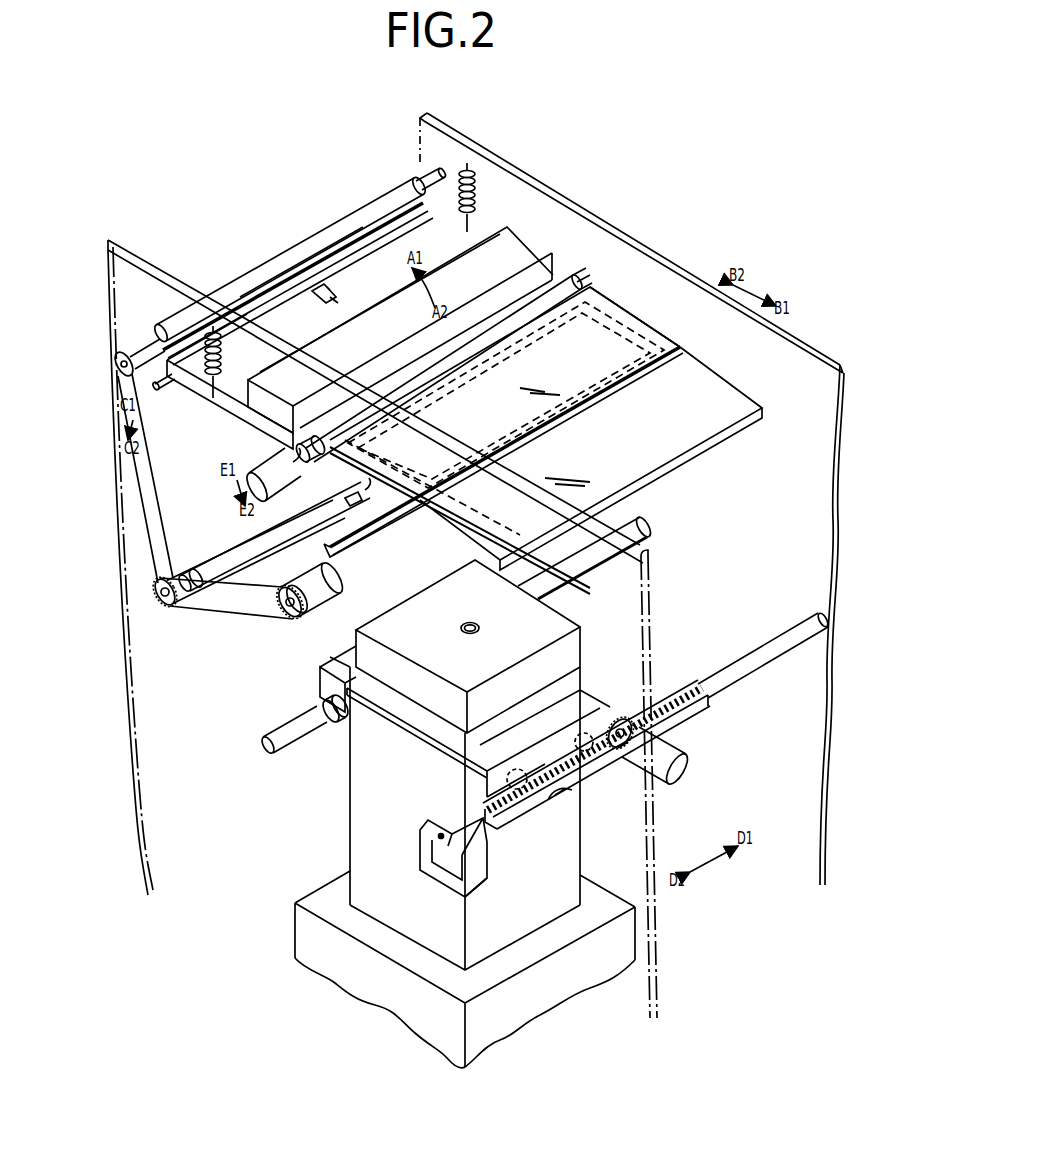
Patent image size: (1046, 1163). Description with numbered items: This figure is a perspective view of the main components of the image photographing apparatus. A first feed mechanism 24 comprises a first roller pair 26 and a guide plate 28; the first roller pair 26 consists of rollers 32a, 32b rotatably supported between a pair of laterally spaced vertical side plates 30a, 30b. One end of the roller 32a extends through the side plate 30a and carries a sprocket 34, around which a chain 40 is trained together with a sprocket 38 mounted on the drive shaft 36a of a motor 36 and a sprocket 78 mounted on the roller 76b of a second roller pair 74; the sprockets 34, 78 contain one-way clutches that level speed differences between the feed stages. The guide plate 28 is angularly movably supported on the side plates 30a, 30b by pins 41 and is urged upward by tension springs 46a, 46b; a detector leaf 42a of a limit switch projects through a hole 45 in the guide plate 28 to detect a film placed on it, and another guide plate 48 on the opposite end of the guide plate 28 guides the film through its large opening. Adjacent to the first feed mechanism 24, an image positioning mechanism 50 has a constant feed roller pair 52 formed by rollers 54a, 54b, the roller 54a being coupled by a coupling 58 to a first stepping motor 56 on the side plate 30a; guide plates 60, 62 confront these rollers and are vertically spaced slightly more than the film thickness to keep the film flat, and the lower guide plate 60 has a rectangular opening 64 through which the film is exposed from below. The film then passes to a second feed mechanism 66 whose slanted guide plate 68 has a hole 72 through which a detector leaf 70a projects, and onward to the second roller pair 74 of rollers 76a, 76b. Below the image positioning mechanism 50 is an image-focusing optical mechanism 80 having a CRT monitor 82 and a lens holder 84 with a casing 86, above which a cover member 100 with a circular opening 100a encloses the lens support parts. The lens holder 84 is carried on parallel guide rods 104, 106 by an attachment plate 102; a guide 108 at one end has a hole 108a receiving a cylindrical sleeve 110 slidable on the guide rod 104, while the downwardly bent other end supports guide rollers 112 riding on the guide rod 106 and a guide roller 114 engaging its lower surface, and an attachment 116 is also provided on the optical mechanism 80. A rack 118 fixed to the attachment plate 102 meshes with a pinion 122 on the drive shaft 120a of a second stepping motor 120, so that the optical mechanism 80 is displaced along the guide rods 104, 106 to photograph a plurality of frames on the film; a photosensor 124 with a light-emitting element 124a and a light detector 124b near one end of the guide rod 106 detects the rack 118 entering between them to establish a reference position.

The first feed mechanism 24 is at (500, 195).
The first roller pair 26 is at (326, 212).
The guide plate 28 is at (470, 242).
The side plate 30a is at (652, 592).
The side plate 30b is at (608, 222).
The roller 32a is at (272, 298).
The roller 32b is at (300, 250).
The sprocket 34 is at (125, 349).
The motor 36 is at (332, 588).
The drive shaft 36a is at (299, 618).
The sprocket 38 is at (284, 614).
The chain 40 is at (138, 486).
The pins 41 is at (172, 388).
The detector leaf 42a is at (338, 301).
The hole 45 is at (320, 290).
The tension spring 46a is at (472, 190).
The tension spring 46b is at (224, 352).
The guide plate 48 is at (527, 266).
The image positioning mechanism 50 is at (630, 290).
The constant feed roller pair 52 is at (580, 280).
The roller 54a is at (345, 448).
The roller 54b is at (527, 310).
The first stepping motor 56 is at (255, 472).
The coupling 58 is at (298, 452).
The guide plate 60 is at (724, 404).
The guide plate 62 is at (652, 331).
The rectangular opening 64 is at (598, 392).
The second feed mechanism 66 is at (236, 622).
The slanted guide plate 68 is at (355, 541).
The detector leaf 70a is at (358, 498).
The hole 72 is at (340, 506).
The second roller pair 74 is at (184, 556).
The roller 76a is at (232, 580).
The roller 76b is at (224, 548).
The sprocket 78 is at (163, 606).
The image-focusing optical mechanism 80 is at (342, 795).
The CRT monitor 82 is at (575, 988).
The lens holder 84 is at (568, 889).
The casing 86 is at (495, 938).
The cover member 100 is at (580, 626).
The circular opening 100a is at (546, 641).
The attachment plate 102 is at (408, 726).
The guide rod 104 is at (652, 527).
The guide rod 106 is at (748, 676).
The guide 108 is at (322, 683).
The hole 108a is at (400, 741).
The cylindrical sleeve 110 is at (340, 720).
The guide rollers 112 is at (516, 768).
The guide roller 114 is at (556, 800).
The attachment 116 is at (585, 690).
The rack 118 is at (682, 716).
The second stepping motor 120 is at (686, 772).
The drive shaft 120a is at (620, 755).
The pinion 122 is at (636, 718).
The photosensor 124 is at (445, 884).
The light-emitting element 124a is at (425, 840).
The light detector 124b is at (478, 878).